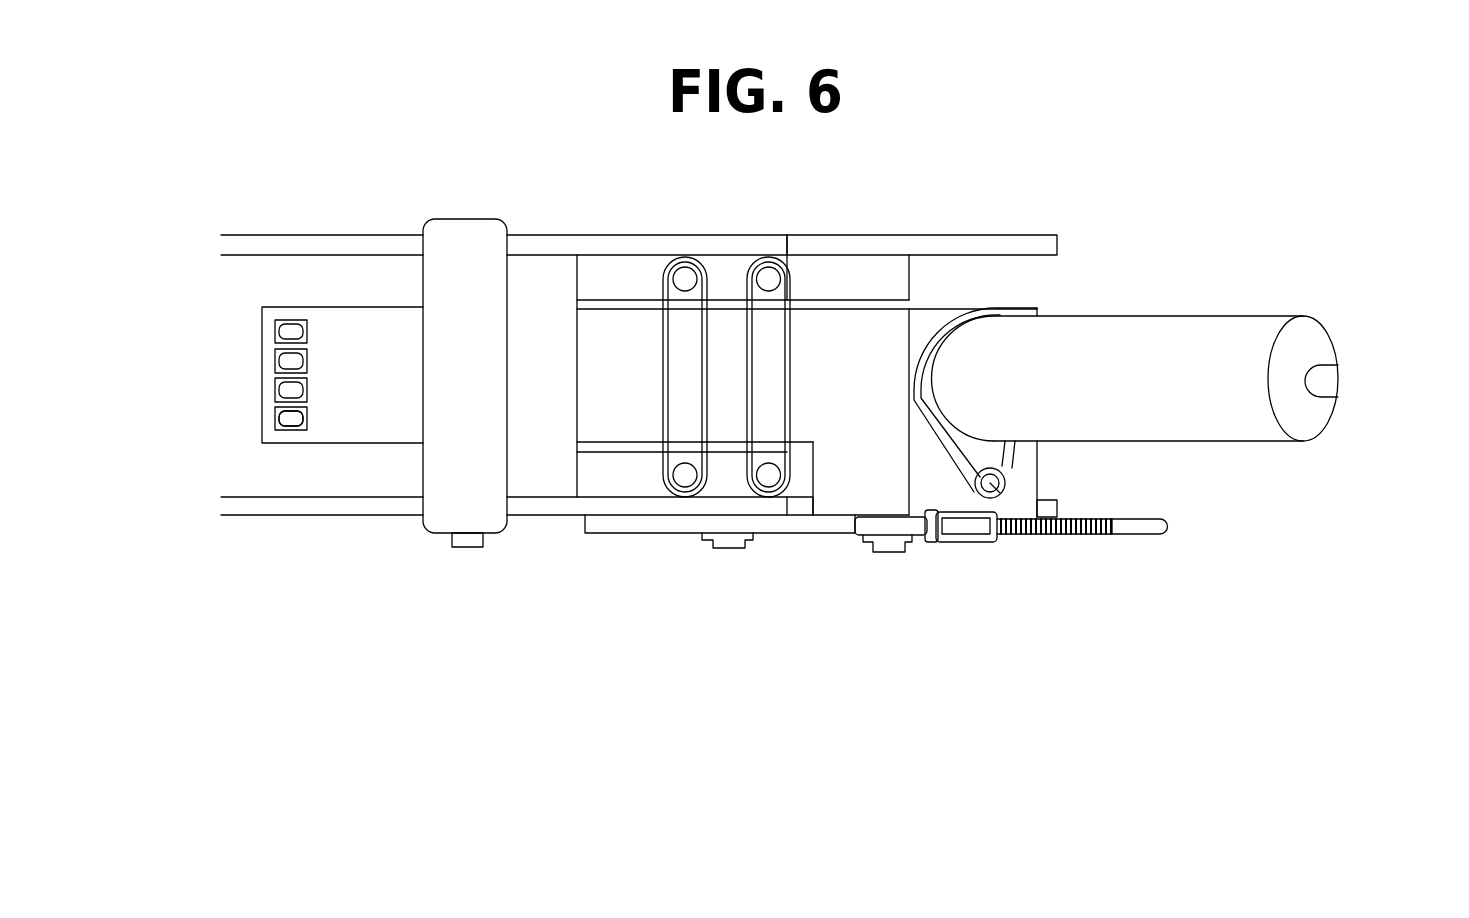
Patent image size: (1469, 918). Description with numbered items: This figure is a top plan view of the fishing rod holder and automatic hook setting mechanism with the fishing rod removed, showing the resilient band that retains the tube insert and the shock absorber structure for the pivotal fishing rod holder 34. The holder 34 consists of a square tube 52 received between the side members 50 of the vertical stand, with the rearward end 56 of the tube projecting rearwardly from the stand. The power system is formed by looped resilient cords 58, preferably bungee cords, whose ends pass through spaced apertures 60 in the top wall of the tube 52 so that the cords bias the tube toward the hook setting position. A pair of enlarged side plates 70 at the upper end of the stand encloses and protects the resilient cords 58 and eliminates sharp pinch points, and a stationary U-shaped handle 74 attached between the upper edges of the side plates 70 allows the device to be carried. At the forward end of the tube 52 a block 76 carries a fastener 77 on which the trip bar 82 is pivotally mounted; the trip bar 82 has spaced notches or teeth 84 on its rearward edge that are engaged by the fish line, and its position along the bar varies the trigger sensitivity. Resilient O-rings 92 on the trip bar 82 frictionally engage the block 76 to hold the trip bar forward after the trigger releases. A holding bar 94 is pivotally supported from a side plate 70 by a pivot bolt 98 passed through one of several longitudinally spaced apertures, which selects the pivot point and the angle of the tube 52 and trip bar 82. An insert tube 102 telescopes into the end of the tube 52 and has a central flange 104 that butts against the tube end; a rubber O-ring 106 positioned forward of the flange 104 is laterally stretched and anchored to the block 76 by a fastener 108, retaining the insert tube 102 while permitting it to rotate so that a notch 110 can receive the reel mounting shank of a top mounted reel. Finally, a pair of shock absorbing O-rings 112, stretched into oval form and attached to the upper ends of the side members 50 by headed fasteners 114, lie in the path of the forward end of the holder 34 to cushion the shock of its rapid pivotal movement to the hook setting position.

The pivotal fishing rod holder 34 is at (338, 445).
The side members 50 is at (588, 267).
The square tube 52 is at (843, 318).
The rearward end of the square tube 56 is at (262, 382).
The resilient cords 58 is at (290, 423).
The apertures 60 is at (275, 328).
The side plates 70 is at (288, 235).
The U-shaped handle 74 is at (467, 242).
The block 76 is at (1022, 475).
The fastener 77 is at (880, 547).
The trip bar 82 is at (1160, 528).
The notches or teeth 84 is at (1063, 537).
The O-rings 92 is at (960, 543).
The holding bar 94 is at (622, 523).
The pivot bolt 98 is at (727, 552).
The insert tube 102 is at (1207, 330).
The central flange 104 is at (920, 412).
The rubber O-ring 106 is at (942, 424).
The fastener 108 is at (1003, 497).
The notch 110 is at (1330, 380).
The shock absorbing O-rings 112 is at (667, 328).
The headed fasteners 114 is at (765, 268).